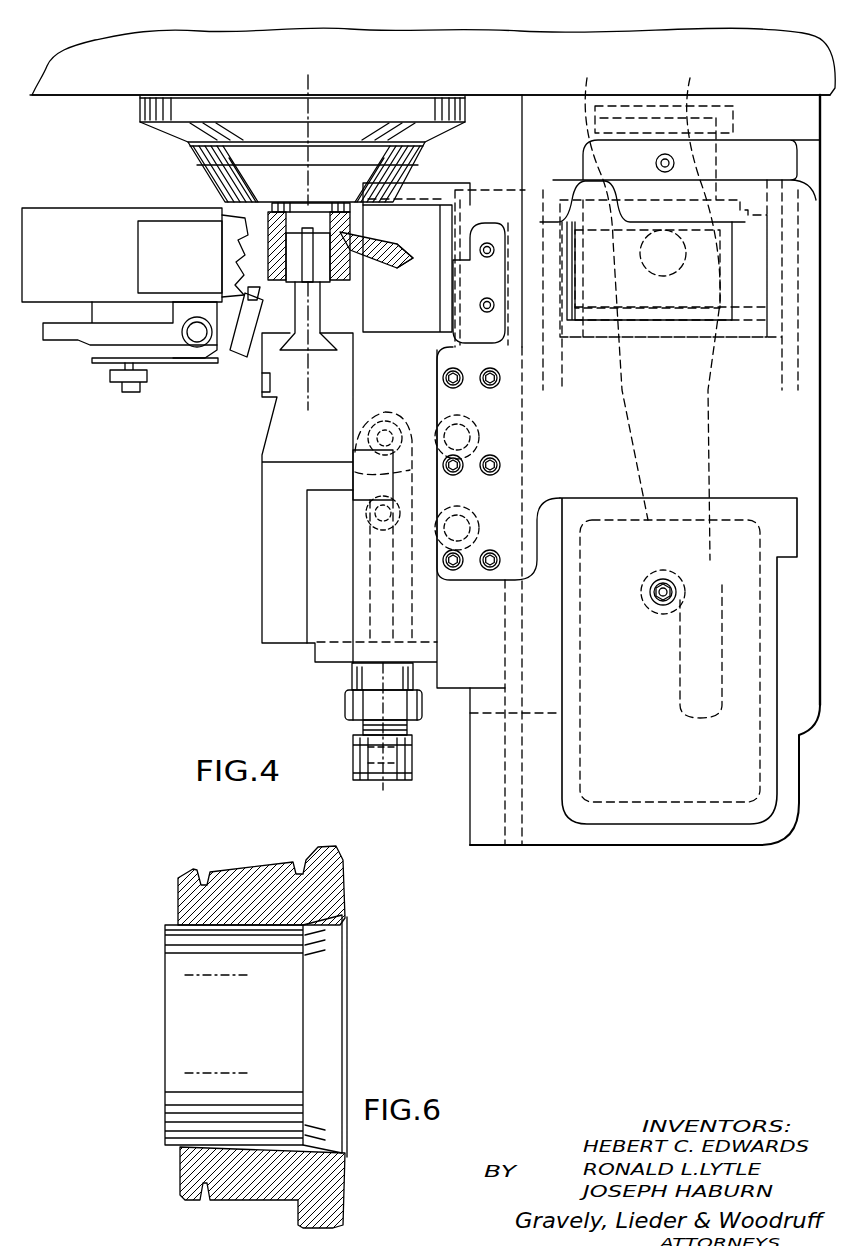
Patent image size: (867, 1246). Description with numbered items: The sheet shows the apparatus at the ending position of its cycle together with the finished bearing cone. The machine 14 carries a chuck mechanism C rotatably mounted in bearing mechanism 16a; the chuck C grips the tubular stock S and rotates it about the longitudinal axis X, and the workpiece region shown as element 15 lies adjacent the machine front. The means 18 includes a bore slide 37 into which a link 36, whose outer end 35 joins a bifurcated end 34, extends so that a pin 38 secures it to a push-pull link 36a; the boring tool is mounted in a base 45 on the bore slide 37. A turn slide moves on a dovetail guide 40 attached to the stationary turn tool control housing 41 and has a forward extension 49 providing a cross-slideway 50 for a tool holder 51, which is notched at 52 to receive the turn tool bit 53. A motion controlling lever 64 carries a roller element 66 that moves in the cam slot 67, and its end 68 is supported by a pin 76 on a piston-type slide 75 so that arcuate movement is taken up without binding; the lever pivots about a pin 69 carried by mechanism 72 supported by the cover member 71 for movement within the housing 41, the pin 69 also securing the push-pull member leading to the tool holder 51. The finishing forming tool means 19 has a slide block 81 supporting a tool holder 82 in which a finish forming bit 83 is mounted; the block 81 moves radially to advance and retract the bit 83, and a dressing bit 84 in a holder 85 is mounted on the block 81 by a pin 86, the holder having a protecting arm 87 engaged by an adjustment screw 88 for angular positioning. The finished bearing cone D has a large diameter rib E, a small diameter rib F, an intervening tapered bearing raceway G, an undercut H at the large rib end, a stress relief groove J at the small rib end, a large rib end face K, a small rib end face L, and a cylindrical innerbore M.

In FIG. 4, the machine 14 is at (740, 56).
In FIG. 4, the workpiece body 15 is at (72, 68).
In FIG. 4, the bearing mechanism 16a is at (243, 100).
In FIG. 4, the means 18 is at (79, 97).
In FIG. 4, the finishing forming tool means 19 is at (91, 394).
In FIG. 4, the bifurcated end 34 is at (354, 763).
In FIG. 4, the outer end 35 is at (378, 780).
In FIG. 4, the link 36 is at (370, 615).
In FIG. 4, the push-pull link 36a is at (356, 470).
In FIG. 4, the bore slide 37 is at (262, 594).
In FIG. 4, the pin 38 is at (366, 518).
In FIG. 4, the dovetail guide 40 is at (487, 834).
In FIG. 4, the turn tool control housing 41 is at (702, 834).
In FIG. 4, the base 45 is at (322, 320).
In FIG. 4, the forward extension 49 is at (460, 186).
In FIG. 4, the cross-slideway 50 is at (410, 318).
In FIG. 4, the tool holder 51 is at (430, 186).
In FIG. 4, the notch 52 is at (405, 263).
In FIG. 4, the turn tool bit 53 is at (378, 242).
In FIG. 4, the motion controlling lever 64 is at (702, 468).
In FIG. 4, the roller element 66 is at (652, 612).
In FIG. 4, the cam slot 67 is at (678, 678).
In FIG. 4, the end 68 is at (652, 145).
In FIG. 4, the pin 69 is at (665, 283).
In FIG. 4, the cover member 71 is at (748, 490).
In FIG. 4, the mechanism 72 is at (758, 340).
In FIG. 4, the slide 75 is at (612, 286).
In FIG. 4, the pin 76 is at (697, 306).
In FIG. 4, the slide block 81 is at (70, 212).
In FIG. 4, the tool holder 82 is at (140, 261).
In FIG. 4, the finish forming bit 83 is at (228, 262).
In FIG. 4, the dressing bit 84 is at (257, 297).
In FIG. 4, the holder 85 is at (240, 357).
In FIG. 4, the pin 86 is at (197, 340).
In FIG. 4, the protecting arm 87 is at (92, 342).
In FIG. 4, the adjustment screw 88 is at (133, 393).
In FIG. 4, the chuck mechanism C is at (287, 190).
In FIG. 4, the stock S is at (270, 215).
In FIG. 4, the axial line X is at (306, 238).
In FIG. 6, the bearing cone D is at (147, 1030).
In FIG. 6, the large diameter rib E is at (323, 857).
In FIG. 6, the small diameter rib F is at (185, 875).
In FIG. 6, the tapered bearing raceway G is at (258, 866).
In FIG. 6, the undercut H is at (300, 860).
In FIG. 6, the stress relief groove J is at (204, 878).
In FIG. 6, the large rib end face K is at (345, 898).
In FIG. 6, the small rib end face L is at (178, 909).
In FIG. 6, the innerbore M is at (268, 928).